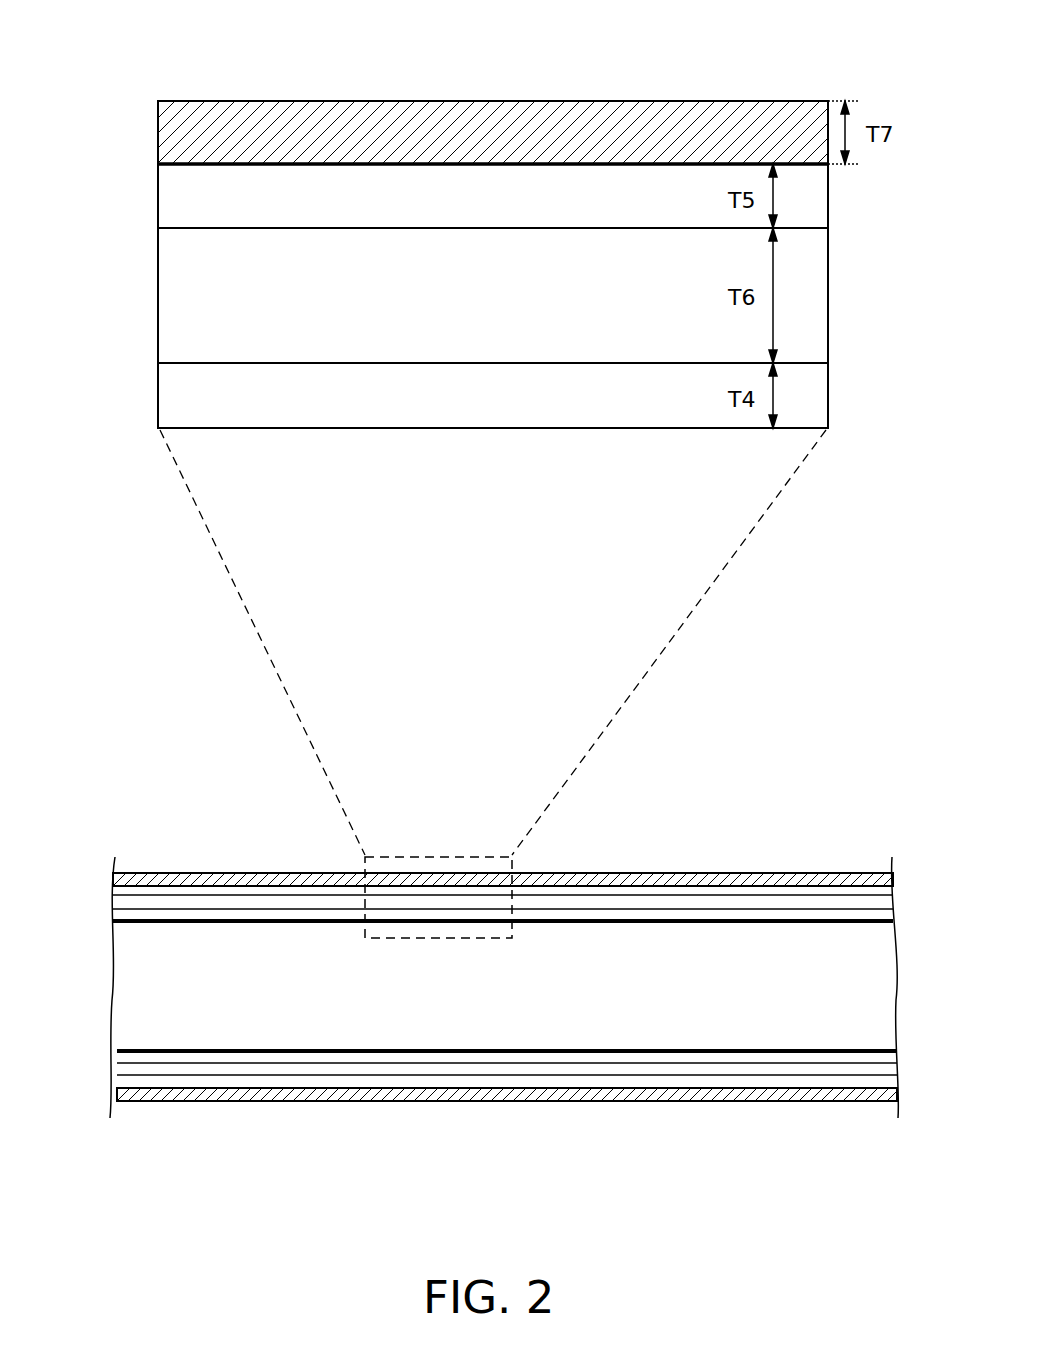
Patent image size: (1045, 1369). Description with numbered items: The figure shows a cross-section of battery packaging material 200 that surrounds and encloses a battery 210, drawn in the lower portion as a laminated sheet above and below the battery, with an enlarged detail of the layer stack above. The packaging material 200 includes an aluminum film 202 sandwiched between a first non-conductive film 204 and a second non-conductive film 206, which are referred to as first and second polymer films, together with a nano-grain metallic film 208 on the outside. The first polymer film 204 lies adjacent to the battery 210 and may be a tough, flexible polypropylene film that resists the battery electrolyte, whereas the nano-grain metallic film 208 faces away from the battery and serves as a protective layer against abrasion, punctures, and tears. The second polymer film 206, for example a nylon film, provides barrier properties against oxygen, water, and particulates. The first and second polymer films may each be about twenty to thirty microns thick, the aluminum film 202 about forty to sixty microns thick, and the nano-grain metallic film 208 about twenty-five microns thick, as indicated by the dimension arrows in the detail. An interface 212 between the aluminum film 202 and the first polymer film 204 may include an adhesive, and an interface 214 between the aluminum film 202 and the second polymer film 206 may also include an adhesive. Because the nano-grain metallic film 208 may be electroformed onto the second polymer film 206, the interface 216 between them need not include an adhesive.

The battery packaging material 200 is at (724, 38).
The aluminum film 202 is at (226, 306).
The first non-conductive film 204 is at (226, 404).
The second non-conductive film 206 is at (226, 208).
The nano-grain metallic film 208 is at (158, 130).
The battery 210 is at (236, 996).
The interface 212 is at (473, 364).
The interface 214 is at (421, 228).
The interface 216 is at (618, 165).